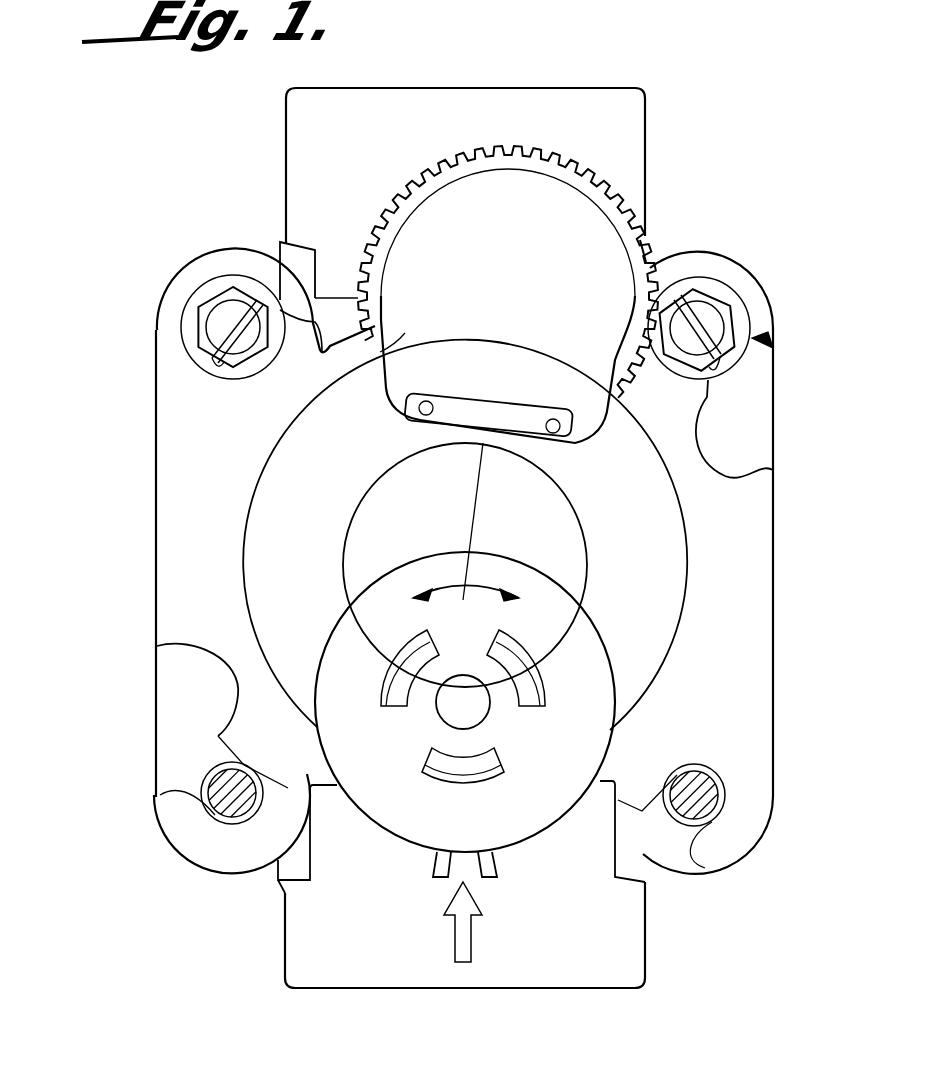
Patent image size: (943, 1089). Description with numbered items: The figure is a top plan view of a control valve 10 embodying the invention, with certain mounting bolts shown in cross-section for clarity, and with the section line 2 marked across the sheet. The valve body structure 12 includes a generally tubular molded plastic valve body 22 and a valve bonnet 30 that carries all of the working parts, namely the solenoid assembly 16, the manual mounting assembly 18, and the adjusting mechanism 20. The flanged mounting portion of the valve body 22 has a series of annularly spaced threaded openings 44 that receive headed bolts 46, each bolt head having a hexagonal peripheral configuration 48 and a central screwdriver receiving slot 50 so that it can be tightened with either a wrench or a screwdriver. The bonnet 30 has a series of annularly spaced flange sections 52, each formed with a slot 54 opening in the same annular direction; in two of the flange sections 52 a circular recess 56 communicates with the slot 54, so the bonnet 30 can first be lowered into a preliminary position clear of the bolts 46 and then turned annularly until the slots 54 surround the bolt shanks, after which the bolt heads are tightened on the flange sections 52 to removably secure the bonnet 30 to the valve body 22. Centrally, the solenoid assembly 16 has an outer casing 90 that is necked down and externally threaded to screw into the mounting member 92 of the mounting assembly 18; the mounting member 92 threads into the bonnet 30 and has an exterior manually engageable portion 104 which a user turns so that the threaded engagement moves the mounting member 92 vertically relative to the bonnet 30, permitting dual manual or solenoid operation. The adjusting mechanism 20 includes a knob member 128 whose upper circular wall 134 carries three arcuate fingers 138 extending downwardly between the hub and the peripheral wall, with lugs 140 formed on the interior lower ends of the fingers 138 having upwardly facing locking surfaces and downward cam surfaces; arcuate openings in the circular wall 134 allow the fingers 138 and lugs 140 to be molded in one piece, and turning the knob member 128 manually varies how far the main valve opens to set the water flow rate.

The section line 2- 2 is at (534, 122).
The control valve 10 is at (690, 172).
The valve body structure 12 is at (152, 483).
The solenoid assembly 16 is at (640, 240).
The manual mounting assembly 18 is at (400, 189).
The adjusting mechanism 20 is at (606, 750).
The valve body 22 is at (648, 950).
The valve bonnet 30 is at (683, 568).
The threaded openings 44 is at (212, 800).
The headed bolts 46 is at (212, 324).
The hexagonal peripheral configuration 48 is at (216, 298).
The screwdriver receiving slot 50 is at (213, 350).
The flange sections 52 is at (205, 262).
The slot 54 is at (258, 262).
The circular recess 56 is at (755, 470).
The outer casing 90 is at (385, 402).
The mounting member 92 is at (544, 160).
The manually engageable portion 104 is at (456, 150).
The knob member 128 is at (600, 636).
The upper circular wall 134 is at (343, 740).
The arcuate fingers 138 is at (424, 672).
The lugs 140 is at (430, 648).